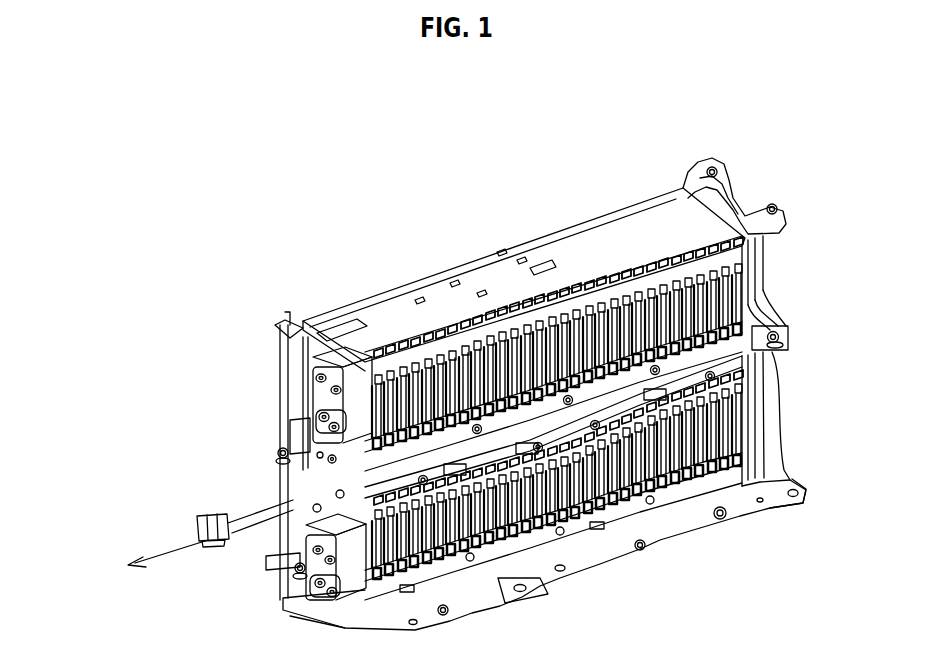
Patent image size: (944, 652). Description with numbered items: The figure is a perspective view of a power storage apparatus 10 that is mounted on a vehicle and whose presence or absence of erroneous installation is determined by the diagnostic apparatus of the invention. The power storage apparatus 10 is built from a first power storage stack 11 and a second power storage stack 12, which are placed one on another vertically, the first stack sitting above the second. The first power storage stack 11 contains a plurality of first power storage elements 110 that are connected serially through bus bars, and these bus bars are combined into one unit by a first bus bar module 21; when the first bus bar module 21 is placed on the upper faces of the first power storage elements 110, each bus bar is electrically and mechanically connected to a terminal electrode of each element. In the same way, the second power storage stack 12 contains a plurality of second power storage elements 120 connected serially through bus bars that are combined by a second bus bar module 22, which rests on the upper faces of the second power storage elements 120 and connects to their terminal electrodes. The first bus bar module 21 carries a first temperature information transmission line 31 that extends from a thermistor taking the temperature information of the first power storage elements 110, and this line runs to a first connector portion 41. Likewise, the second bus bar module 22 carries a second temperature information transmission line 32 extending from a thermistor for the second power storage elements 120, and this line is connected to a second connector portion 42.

The power storage apparatus 10 is at (692, 135).
The first power storage stack 11 is at (785, 286).
The second power storage stack 12 is at (783, 412).
The first bus bar module 21 is at (718, 212).
The second bus bar module 22 is at (787, 345).
The first temperature information transmission line 31 is at (292, 374).
The second temperature information transmission line 32 is at (305, 576).
The first connector portion 41 is at (289, 443).
The second connector portion 42 is at (278, 451).
The first power storage elements 110 is at (614, 326).
The second power storage elements 120 is at (622, 528).